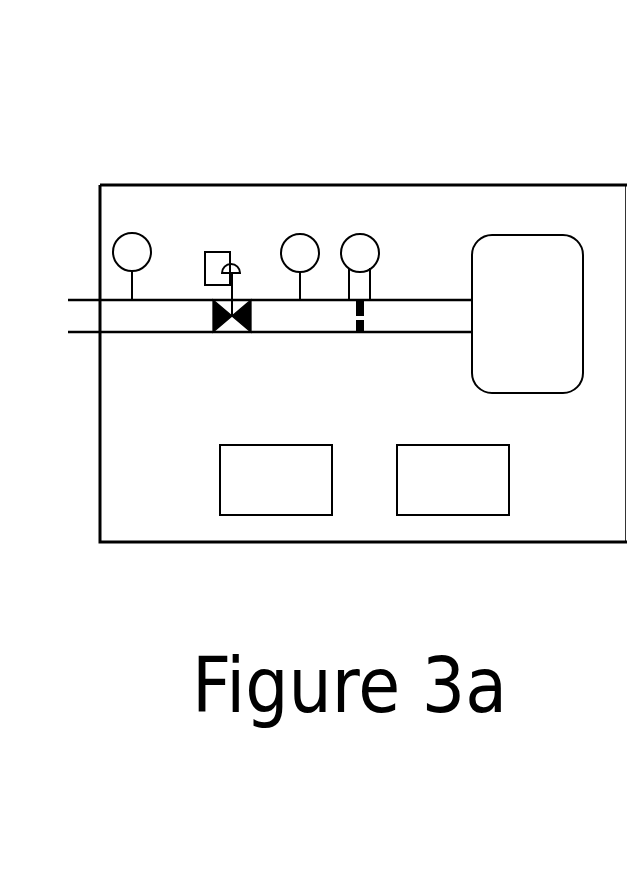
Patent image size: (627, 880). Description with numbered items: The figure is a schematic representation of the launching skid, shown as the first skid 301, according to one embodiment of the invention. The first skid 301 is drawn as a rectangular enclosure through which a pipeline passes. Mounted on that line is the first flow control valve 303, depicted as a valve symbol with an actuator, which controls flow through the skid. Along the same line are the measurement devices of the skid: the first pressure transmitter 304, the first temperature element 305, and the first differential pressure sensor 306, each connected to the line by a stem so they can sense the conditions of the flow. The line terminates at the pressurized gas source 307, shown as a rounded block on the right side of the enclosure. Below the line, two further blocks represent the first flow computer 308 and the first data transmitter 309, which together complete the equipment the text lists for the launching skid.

The first skid 301 is at (363, 392).
The first flow control valve 303 is at (240, 363).
The first pressure transmitter 304 is at (150, 204).
The first temperature element 305 is at (276, 204).
The first differential pressure sensor 306 is at (379, 209).
The pressurized gas source 307 is at (527, 314).
The first flow computer 308 is at (276, 480).
The first data transmitter 309 is at (453, 480).